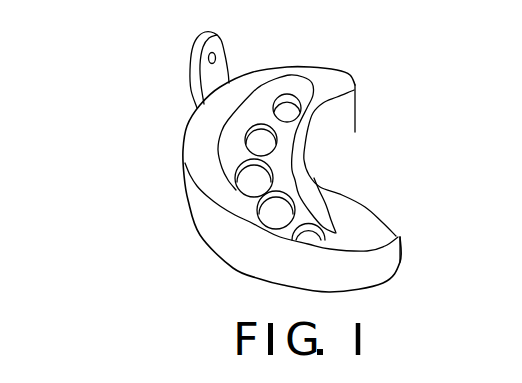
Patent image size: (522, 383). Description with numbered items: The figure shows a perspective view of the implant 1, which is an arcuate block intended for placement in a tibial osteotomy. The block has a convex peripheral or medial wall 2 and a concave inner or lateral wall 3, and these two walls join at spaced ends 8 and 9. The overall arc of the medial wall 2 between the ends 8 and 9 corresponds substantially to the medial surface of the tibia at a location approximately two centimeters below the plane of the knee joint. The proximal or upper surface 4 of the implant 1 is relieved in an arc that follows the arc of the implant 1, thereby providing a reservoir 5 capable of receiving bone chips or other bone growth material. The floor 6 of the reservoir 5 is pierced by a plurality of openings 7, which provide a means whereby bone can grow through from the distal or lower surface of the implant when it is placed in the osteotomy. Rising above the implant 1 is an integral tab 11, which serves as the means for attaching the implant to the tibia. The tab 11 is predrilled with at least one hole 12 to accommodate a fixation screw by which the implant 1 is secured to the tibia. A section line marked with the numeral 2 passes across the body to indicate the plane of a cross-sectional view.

The implant 1 is at (157, 107).
The medial wall 2 is at (160, 175).
The lateral wall 3 is at (323, 137).
The upper surface 4 is at (260, 77).
The reservoir 5 is at (278, 85).
The floor 6 is at (283, 184).
The openings 7 is at (237, 183).
The end 8 is at (358, 112).
The end 9 is at (400, 256).
The tab 11 is at (190, 52).
The hole 12 is at (216, 57).